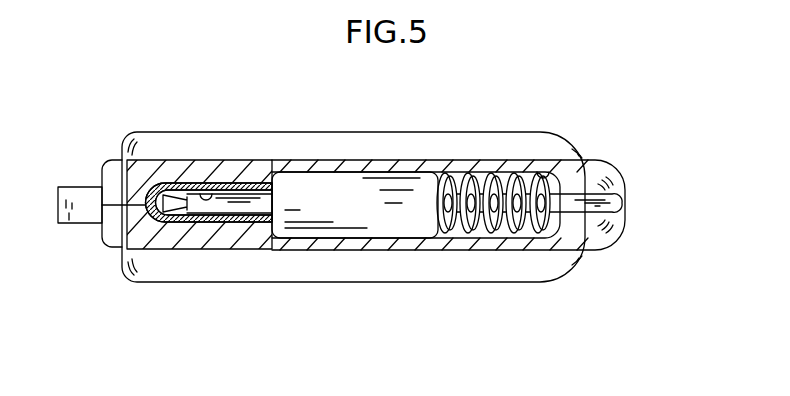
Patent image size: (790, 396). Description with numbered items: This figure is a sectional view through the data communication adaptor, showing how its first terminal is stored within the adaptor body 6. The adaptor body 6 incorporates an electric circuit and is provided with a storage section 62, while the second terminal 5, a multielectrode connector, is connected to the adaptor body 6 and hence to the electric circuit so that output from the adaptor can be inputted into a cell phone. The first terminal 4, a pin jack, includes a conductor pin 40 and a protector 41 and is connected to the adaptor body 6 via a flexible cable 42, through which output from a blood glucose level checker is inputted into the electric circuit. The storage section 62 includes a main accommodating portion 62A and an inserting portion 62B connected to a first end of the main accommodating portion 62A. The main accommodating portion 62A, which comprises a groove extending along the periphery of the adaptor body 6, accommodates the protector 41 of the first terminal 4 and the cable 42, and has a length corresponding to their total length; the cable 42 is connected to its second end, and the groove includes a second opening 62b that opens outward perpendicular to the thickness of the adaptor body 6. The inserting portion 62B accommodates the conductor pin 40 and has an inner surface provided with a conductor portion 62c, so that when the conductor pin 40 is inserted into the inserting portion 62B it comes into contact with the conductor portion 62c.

The first terminal 4 is at (343, 178).
The second terminal 5 is at (80, 192).
The adaptor body 6 is at (427, 122).
The conductor pin 40 is at (220, 232).
The protector 41 is at (377, 222).
The flexible cable 42 is at (623, 203).
The storage section 62 is at (510, 172).
The main accommodating portion 62A is at (505, 218).
The inserting portion 62B is at (213, 192).
The second opening 62b is at (553, 175).
The conductor portion 62c is at (195, 226).